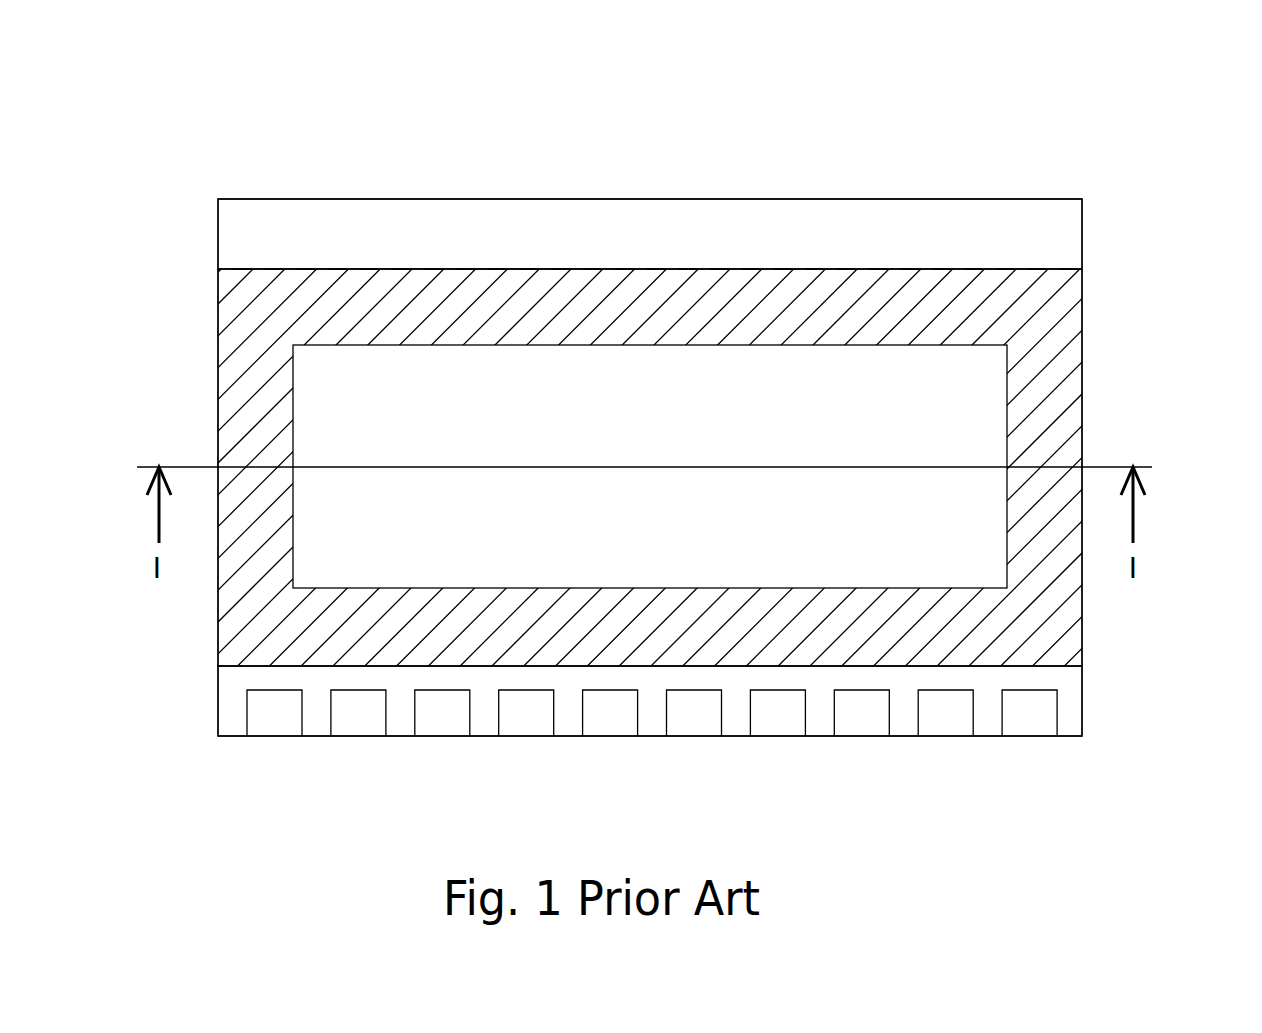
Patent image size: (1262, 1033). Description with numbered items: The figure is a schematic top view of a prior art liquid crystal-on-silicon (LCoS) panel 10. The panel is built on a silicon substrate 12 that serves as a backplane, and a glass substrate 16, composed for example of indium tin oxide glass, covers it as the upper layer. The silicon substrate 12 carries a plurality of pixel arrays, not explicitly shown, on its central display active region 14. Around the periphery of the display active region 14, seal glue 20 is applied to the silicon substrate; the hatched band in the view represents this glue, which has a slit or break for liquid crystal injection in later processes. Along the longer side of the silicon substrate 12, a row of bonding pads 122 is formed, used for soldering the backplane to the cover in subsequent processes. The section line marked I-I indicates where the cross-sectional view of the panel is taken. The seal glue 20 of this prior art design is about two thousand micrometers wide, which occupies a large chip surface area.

The LCoS panel 10 is at (1122, 128).
The silicon substrate 12 is at (687, 739).
The bonding pads 122 is at (281, 715).
The display active region 14 is at (596, 551).
The glass substrate 16 is at (683, 225).
The seal glue 20 is at (1063, 337).